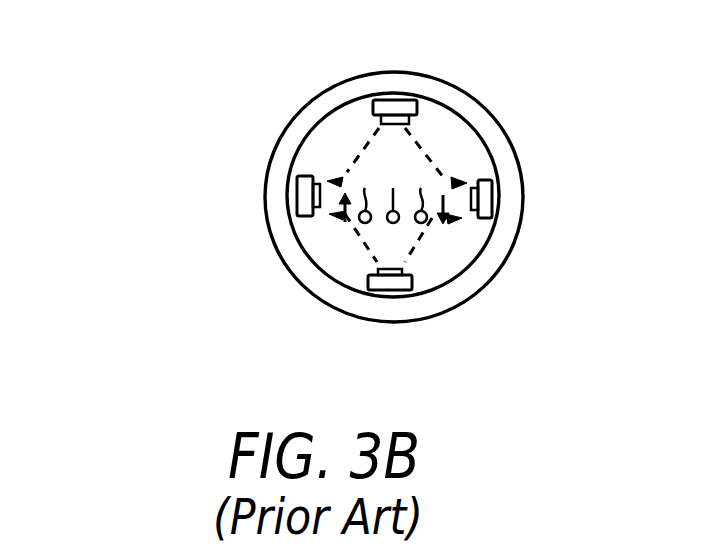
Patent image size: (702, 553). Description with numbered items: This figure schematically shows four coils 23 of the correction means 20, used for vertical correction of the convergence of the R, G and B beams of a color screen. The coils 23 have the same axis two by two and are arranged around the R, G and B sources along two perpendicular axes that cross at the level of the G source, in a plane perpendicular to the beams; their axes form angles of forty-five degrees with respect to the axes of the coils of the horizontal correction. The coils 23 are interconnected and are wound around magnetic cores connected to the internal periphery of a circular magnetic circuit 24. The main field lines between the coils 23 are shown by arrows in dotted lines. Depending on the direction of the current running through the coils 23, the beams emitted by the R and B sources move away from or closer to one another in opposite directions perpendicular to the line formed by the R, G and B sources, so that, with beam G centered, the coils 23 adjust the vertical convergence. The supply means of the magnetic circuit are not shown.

The correction means 20 is at (97, 70).
The coils 23 is at (393, 100).
The circular magnetic circuit 24 is at (317, 276).